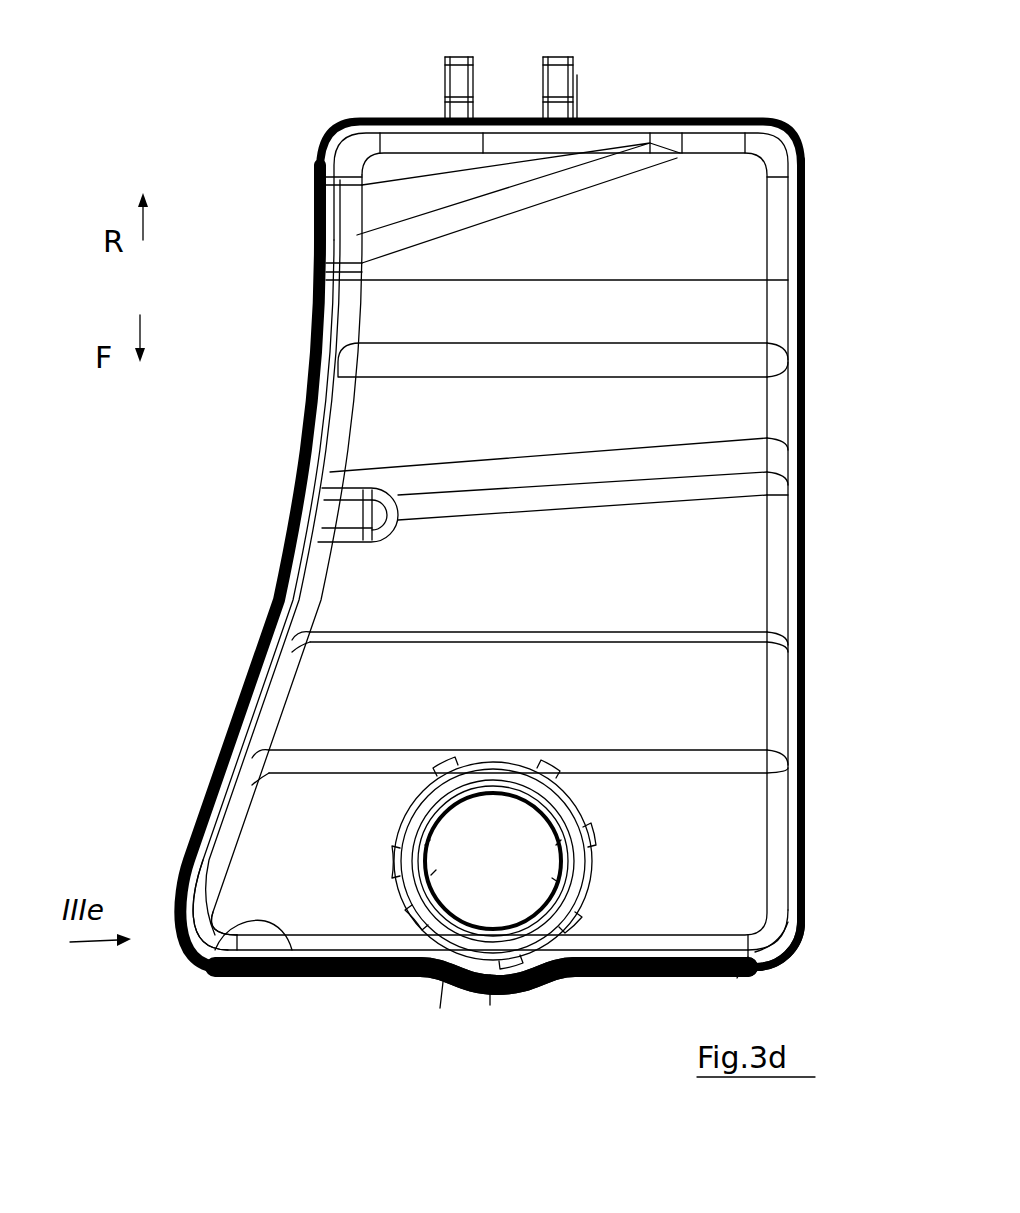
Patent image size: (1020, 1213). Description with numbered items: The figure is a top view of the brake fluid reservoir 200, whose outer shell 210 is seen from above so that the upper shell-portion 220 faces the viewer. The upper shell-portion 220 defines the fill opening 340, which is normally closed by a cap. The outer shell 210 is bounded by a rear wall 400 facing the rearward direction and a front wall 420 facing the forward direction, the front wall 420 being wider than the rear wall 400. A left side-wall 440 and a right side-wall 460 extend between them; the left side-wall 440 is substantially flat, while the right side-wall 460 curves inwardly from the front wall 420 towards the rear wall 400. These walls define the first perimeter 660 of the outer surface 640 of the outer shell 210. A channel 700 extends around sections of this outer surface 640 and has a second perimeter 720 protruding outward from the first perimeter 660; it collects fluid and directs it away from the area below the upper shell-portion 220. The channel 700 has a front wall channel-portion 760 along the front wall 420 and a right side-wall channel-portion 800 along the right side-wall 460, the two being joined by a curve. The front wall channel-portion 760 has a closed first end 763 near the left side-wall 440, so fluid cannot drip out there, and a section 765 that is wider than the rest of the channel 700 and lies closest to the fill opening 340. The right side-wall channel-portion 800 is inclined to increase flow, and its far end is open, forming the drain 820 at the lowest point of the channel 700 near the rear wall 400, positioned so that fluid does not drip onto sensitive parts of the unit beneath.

The brake fluid reservoir 200 is at (672, 82).
The outer shell 210 is at (762, 118).
The upper shell-portion 220 is at (690, 255).
The fill opening 340 is at (545, 892).
The rear wall 400 is at (407, 112).
The front wall 420 is at (755, 968).
The left side-wall 440 is at (812, 683).
The right side-wall 460 is at (282, 578).
The outer surface 640 is at (452, 982).
The first perimeter 660 is at (190, 977).
The channel 700 is at (322, 978).
The second perimeter 720 is at (235, 982).
The front wall channel-portion 760 is at (610, 984).
The first end 763 is at (742, 978).
The section 765 is at (493, 990).
The right side-wall channel-portion 800 is at (217, 762).
The drain 820 is at (320, 178).